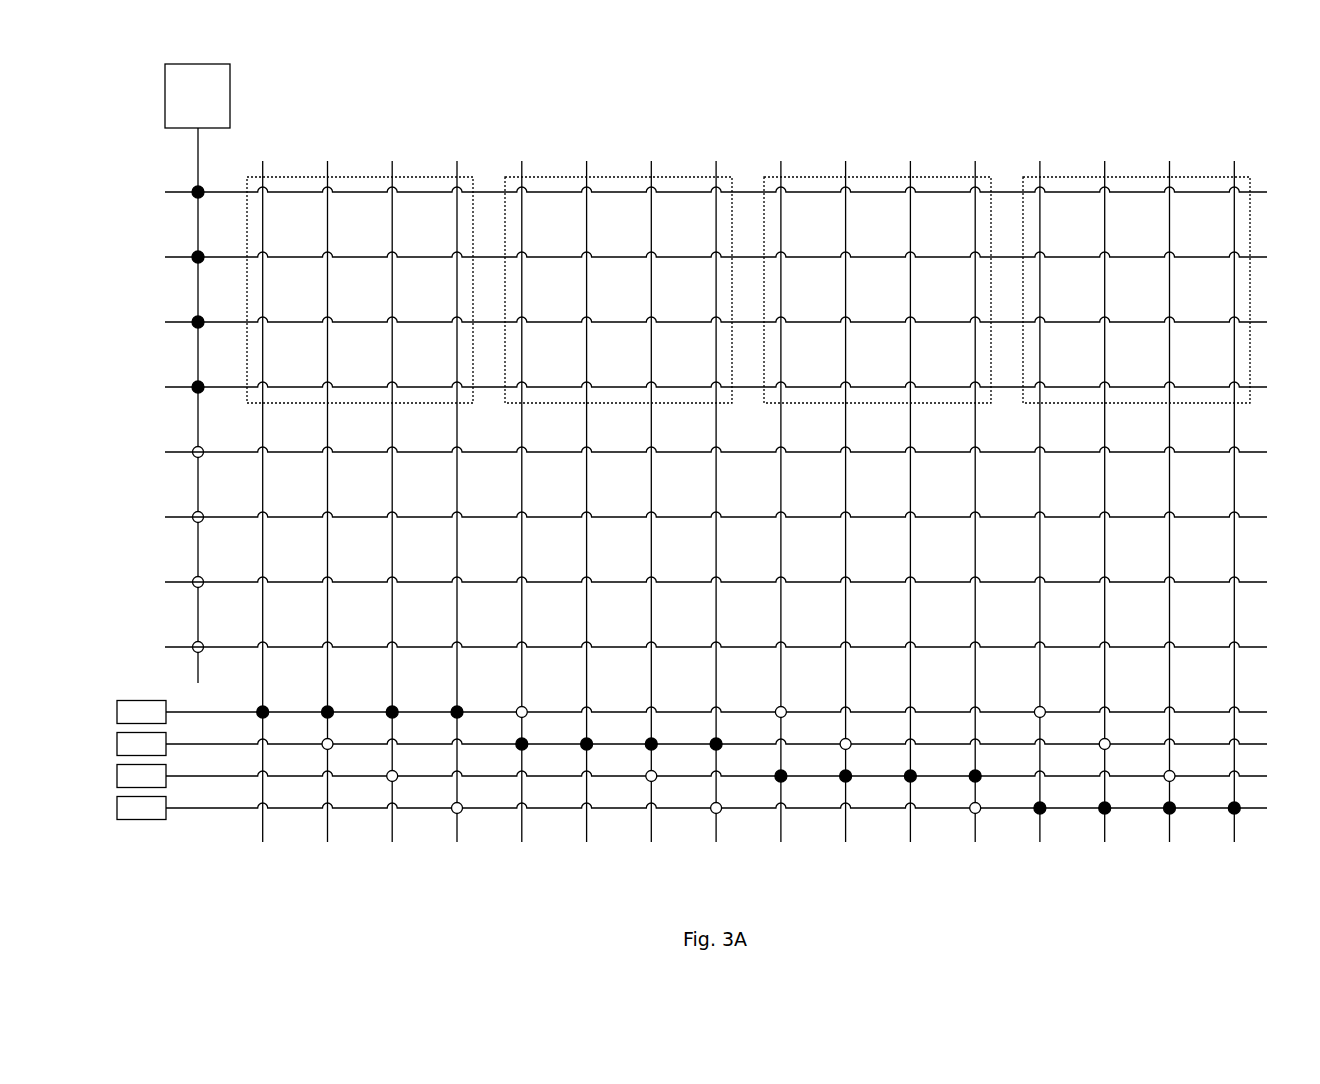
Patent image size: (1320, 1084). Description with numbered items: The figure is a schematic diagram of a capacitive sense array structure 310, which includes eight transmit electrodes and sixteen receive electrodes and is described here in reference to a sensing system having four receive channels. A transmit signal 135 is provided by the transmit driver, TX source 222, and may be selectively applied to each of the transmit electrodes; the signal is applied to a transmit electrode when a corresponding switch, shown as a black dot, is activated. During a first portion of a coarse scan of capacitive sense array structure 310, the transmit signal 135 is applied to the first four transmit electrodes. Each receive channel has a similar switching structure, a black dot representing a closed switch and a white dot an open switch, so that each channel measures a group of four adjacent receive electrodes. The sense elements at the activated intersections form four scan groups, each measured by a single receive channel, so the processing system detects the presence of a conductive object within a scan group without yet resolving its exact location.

The TX source 222 is at (184, 113).
The transmit signal 135 is at (198, 132).
The capacitive sense array structure 310 is at (1045, 115).